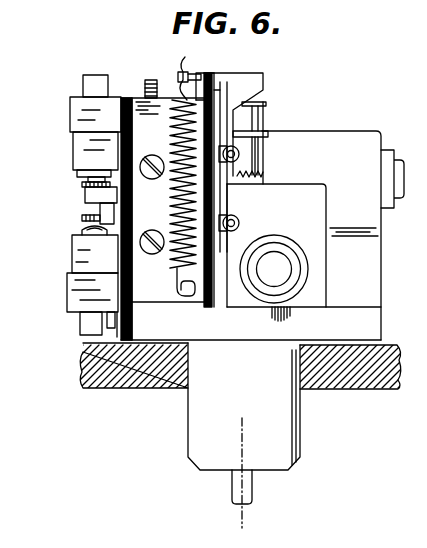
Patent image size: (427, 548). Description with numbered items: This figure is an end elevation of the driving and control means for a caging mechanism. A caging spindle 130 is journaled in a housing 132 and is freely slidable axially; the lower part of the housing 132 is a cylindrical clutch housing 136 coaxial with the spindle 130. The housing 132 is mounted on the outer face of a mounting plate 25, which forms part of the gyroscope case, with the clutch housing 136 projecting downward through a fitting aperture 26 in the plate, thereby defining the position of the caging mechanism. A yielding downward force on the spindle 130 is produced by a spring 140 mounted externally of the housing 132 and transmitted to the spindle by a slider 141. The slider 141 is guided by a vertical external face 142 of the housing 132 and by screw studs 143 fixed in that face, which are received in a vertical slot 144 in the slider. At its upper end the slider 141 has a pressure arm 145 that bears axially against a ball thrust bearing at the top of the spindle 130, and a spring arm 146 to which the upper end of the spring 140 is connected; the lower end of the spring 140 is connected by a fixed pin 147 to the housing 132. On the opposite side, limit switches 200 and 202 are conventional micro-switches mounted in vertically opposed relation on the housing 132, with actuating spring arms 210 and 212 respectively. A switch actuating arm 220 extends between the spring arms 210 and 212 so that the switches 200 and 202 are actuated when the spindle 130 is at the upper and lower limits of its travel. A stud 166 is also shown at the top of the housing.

The mounting plate 25 is at (354, 385).
The fitting aperture 26 is at (186, 382).
The caging spindle 130 is at (252, 489).
The housing 132 is at (384, 333).
The clutch housing 136 is at (290, 439).
The spring 140 is at (172, 136).
The slider 141 is at (257, 72).
The vertical external face 142 is at (213, 298).
The screw studs 143 is at (238, 222).
The vertical slot 144 is at (227, 191).
The pressure arm 145 is at (264, 81).
The spring arm 146 is at (184, 57).
The fixed pin 147 is at (180, 292).
The stud 166 is at (150, 80).
The limit switch 200 is at (77, 149).
The limit switch 202 is at (72, 263).
The actuating spring arm 210 is at (82, 184).
The actuating spring arm 212 is at (82, 218).
The switch actuating arm 220 is at (85, 194).